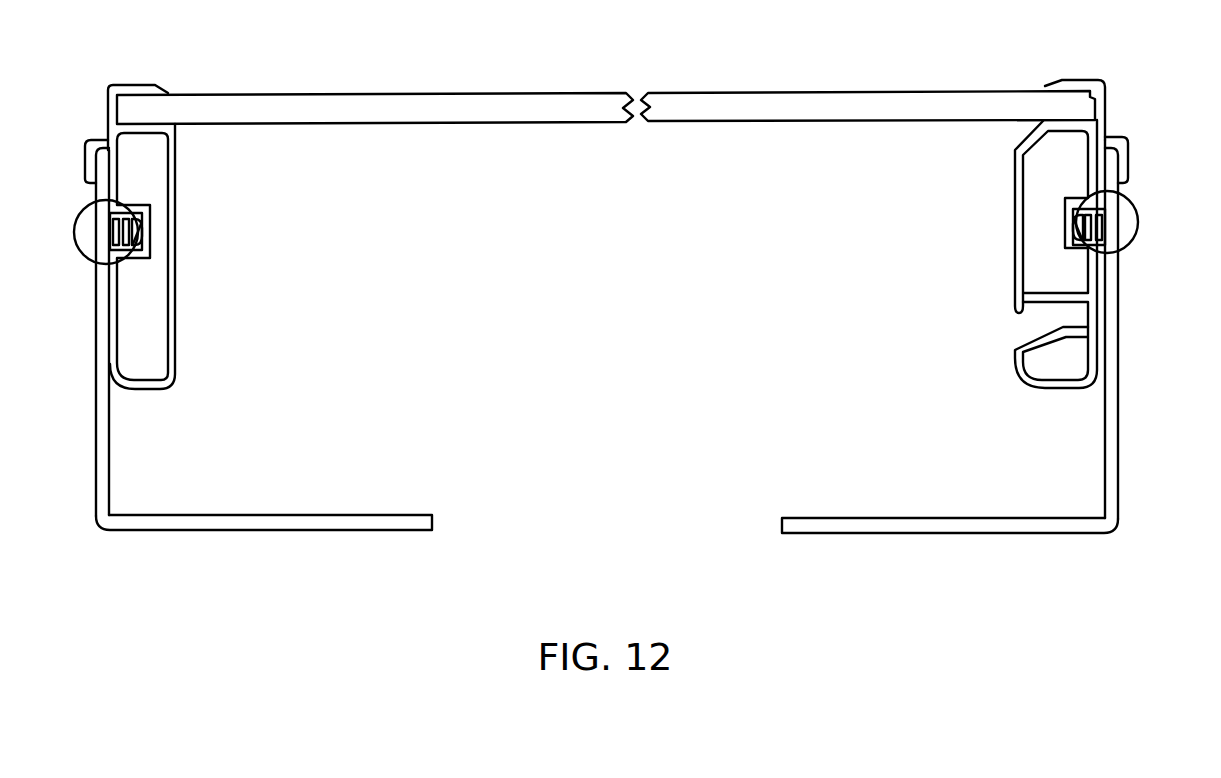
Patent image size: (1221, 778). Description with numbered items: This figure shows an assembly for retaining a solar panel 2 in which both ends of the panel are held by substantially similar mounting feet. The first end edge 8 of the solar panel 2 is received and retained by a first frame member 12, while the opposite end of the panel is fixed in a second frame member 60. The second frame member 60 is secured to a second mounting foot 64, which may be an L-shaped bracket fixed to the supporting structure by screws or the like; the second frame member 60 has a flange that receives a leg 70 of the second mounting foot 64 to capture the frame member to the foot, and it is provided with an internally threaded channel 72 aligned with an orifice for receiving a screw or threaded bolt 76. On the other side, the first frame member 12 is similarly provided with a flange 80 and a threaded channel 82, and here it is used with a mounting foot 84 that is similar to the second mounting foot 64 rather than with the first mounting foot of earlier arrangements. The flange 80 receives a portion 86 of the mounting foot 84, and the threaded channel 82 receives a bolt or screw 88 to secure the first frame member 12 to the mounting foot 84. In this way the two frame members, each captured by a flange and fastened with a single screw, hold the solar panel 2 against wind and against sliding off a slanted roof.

The solar panel 2 is at (432, 93).
The first end edge 8 is at (1070, 95).
The first frame member 12 is at (1015, 188).
The second frame member 60 is at (175, 188).
The second mounting foot 64 is at (112, 418).
The leg 70 is at (98, 345).
The internally threaded channel 72 is at (128, 251).
The screw or threaded bolt 76 is at (75, 228).
The flange 80 is at (1128, 150).
The threaded channel 82 is at (1073, 231).
The mounting foot 84 is at (1105, 417).
The portion of the mounting foot 86 is at (1105, 457).
The bolt or screw 88 is at (1138, 230).